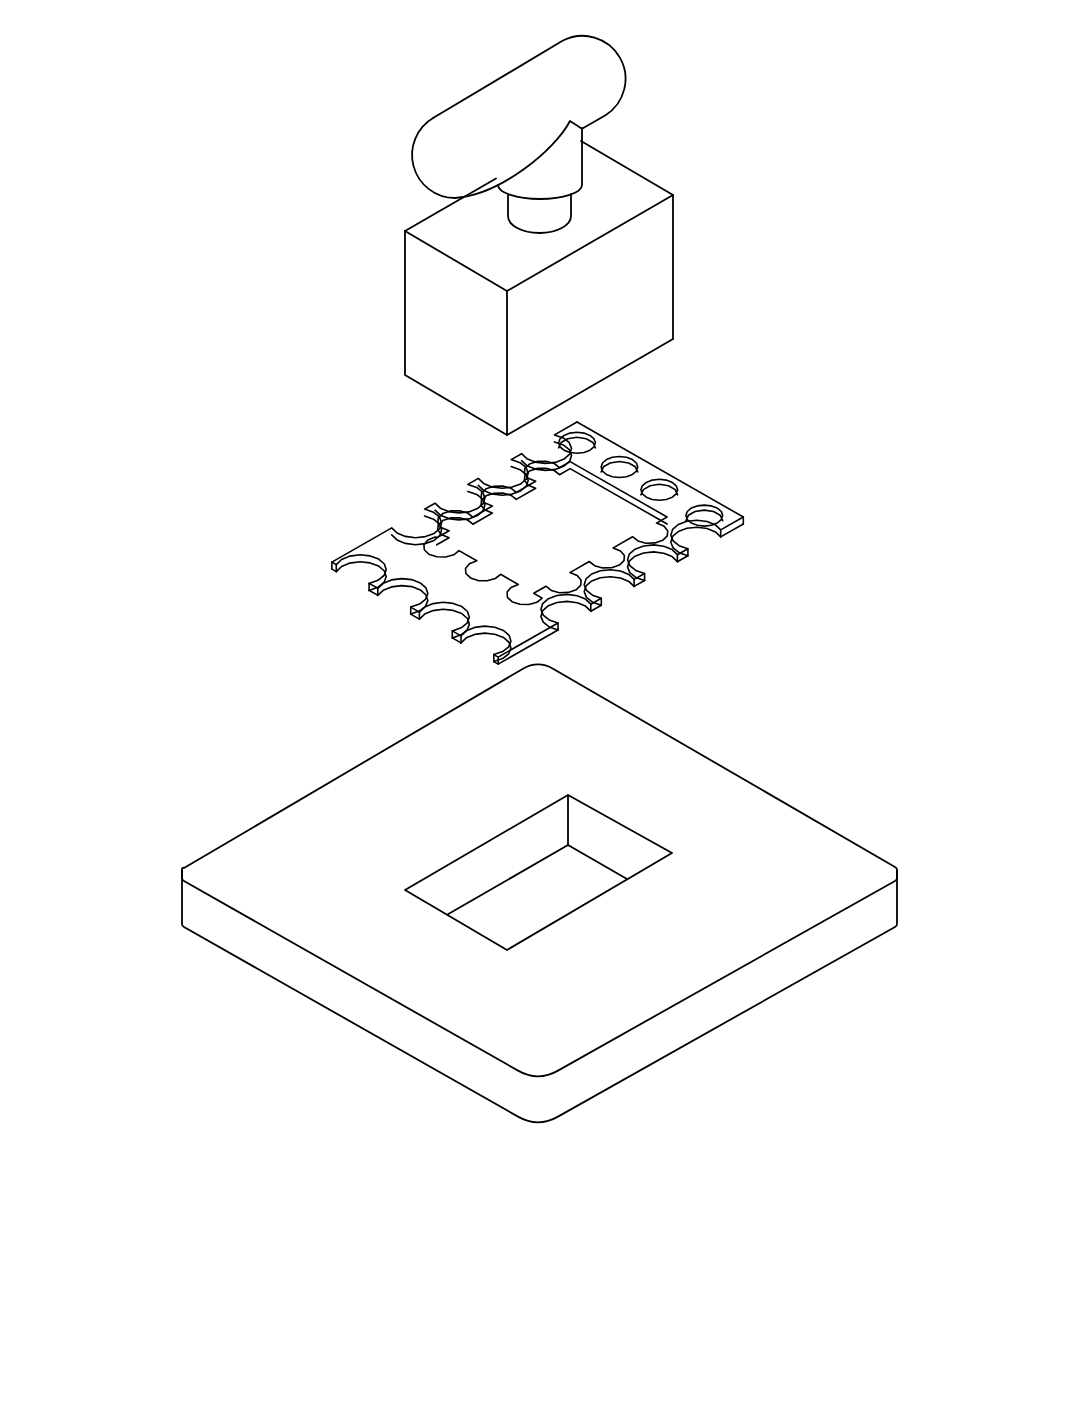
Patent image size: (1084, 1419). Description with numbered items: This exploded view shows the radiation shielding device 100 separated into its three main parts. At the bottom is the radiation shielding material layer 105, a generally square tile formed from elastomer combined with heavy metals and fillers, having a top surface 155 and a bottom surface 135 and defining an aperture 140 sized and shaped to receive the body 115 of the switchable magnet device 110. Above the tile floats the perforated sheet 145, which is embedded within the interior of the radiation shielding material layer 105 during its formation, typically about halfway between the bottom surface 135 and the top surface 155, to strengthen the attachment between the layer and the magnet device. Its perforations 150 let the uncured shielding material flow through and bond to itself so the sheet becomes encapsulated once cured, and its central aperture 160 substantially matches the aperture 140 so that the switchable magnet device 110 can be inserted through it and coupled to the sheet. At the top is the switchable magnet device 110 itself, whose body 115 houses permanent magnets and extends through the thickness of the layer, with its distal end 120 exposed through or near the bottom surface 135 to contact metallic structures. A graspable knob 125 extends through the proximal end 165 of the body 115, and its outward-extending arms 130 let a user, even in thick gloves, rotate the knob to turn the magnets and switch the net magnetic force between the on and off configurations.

The radiation shielding device 100 is at (242, 77).
The radiation shielding material layer 105 is at (182, 908).
The switchable magnet device 110 is at (712, 182).
The body 115 is at (672, 277).
The distal end 120 is at (613, 373).
The knob 125 is at (513, 67).
The arms 130 is at (418, 172).
The bottom surface 135 is at (683, 1045).
The aperture 140 is at (520, 894).
The perforated sheet 145 is at (732, 527).
The perforations 150 is at (367, 570).
The top surface 155 is at (308, 806).
The central aperture 160 is at (487, 537).
The proximal end 165 is at (432, 239).